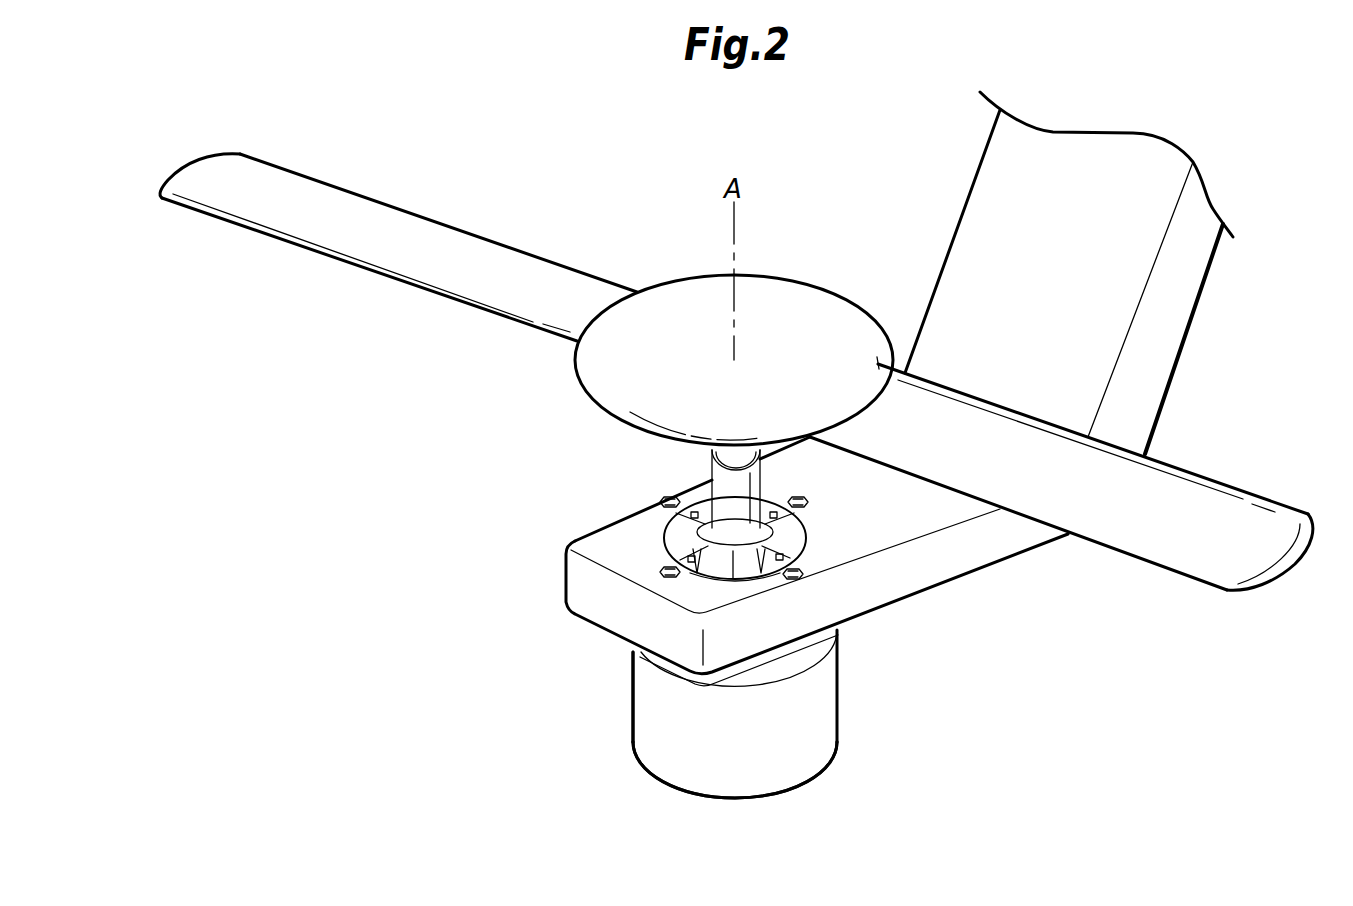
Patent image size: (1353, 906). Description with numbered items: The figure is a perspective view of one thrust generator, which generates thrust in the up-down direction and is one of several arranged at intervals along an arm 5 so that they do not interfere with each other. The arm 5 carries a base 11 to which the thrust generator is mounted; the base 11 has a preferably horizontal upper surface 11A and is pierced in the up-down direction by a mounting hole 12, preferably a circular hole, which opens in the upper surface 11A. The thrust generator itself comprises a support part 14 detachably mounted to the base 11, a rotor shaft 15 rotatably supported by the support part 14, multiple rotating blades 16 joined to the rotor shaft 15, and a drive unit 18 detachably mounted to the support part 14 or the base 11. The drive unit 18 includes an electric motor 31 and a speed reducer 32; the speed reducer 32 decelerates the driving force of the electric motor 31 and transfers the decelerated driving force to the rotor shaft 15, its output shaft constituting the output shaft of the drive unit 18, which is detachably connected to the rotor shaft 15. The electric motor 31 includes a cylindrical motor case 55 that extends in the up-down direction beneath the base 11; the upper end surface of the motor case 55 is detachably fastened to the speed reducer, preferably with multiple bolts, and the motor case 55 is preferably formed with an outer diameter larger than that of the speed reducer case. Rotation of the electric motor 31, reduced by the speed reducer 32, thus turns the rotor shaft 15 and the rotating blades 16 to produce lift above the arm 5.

The arm 5 is at (1089, 274).
The base 11 is at (786, 561).
The upper surface 11A is at (596, 522).
The mounting hole 12 is at (676, 489).
The support part 14 is at (769, 511).
The rotor shaft 15 is at (754, 471).
The rotating blades 16 is at (369, 201).
The drive unit 18 is at (837, 691).
The electric motor 31 is at (624, 712).
The speed reducer 32 is at (792, 645).
The motor case 55 is at (812, 718).